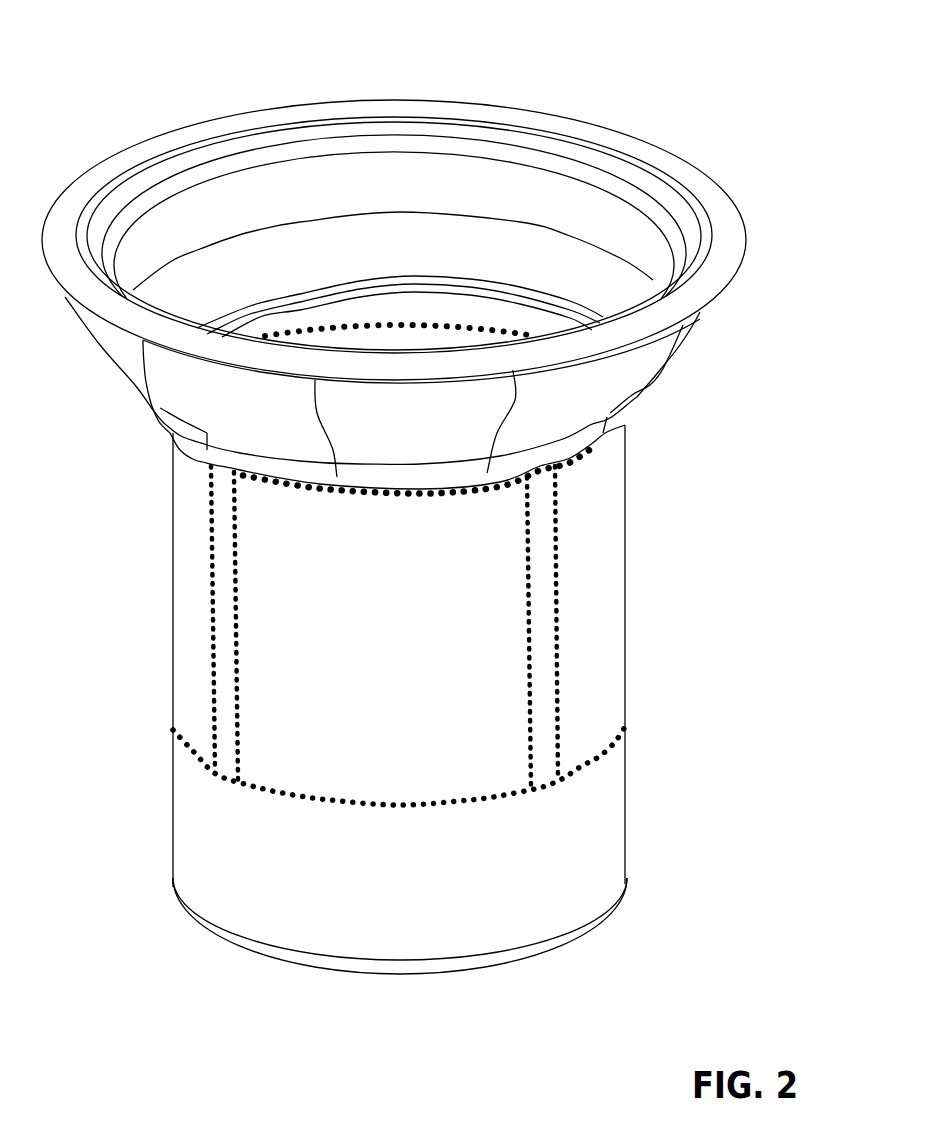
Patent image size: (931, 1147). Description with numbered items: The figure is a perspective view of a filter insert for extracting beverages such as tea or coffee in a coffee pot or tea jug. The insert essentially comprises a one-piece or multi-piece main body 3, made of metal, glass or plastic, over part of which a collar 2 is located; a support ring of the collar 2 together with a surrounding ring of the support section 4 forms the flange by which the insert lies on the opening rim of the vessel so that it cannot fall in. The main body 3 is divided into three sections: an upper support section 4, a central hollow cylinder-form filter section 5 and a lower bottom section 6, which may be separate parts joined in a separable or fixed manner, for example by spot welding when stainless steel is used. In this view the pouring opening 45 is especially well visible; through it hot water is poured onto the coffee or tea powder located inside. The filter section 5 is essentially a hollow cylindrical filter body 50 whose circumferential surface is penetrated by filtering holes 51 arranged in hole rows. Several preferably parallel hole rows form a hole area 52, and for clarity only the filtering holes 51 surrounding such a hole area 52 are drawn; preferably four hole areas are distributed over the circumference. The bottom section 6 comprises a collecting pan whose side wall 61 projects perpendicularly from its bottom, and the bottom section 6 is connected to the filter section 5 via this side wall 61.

The collar 2 is at (725, 257).
The main body 3 is at (170, 620).
The upper support section 4 is at (703, 335).
The central hollow cylinder-form filter section 5 is at (448, 640).
The lower bottom section 6 is at (400, 976).
The pouring opening 45 is at (375, 315).
The filter body 50 is at (597, 528).
The filtering holes 51 is at (580, 777).
The hole area 52 is at (607, 670).
The side wall 61 is at (328, 960).